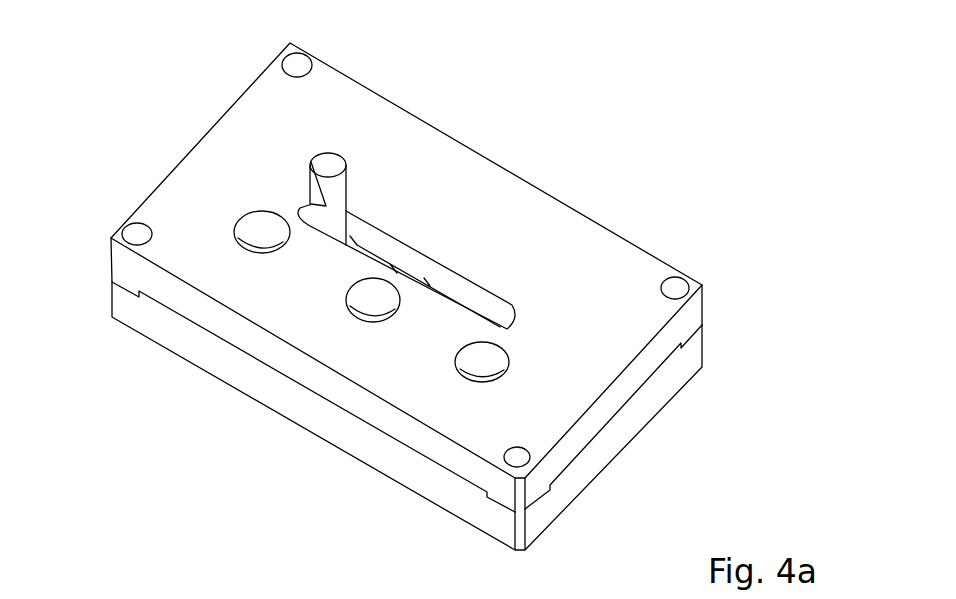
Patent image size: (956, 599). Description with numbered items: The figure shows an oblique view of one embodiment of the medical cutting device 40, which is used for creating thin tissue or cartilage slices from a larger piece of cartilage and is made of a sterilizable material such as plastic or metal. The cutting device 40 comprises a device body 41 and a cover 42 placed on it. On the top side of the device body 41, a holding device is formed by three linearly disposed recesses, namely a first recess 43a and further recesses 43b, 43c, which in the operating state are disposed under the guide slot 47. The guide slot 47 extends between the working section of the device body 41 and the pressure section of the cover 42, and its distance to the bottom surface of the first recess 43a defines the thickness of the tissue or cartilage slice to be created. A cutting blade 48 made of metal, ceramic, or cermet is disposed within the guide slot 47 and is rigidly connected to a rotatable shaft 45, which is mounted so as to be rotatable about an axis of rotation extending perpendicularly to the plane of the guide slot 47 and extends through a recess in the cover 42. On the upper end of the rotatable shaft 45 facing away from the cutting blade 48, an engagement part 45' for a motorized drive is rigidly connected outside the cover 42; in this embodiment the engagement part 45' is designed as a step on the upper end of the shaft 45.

The medical cutting device 40 is at (139, 58).
The device body 41 is at (650, 393).
The cover 42 is at (709, 237).
The first recess 43a is at (470, 377).
The further recess 43b is at (378, 312).
The further recess 43c is at (264, 248).
The rotatable shaft 45 is at (315, 182).
The engagement part 45' is at (193, 177).
The guide slot 47 is at (314, 401).
The cutting blade 48 is at (553, 177).